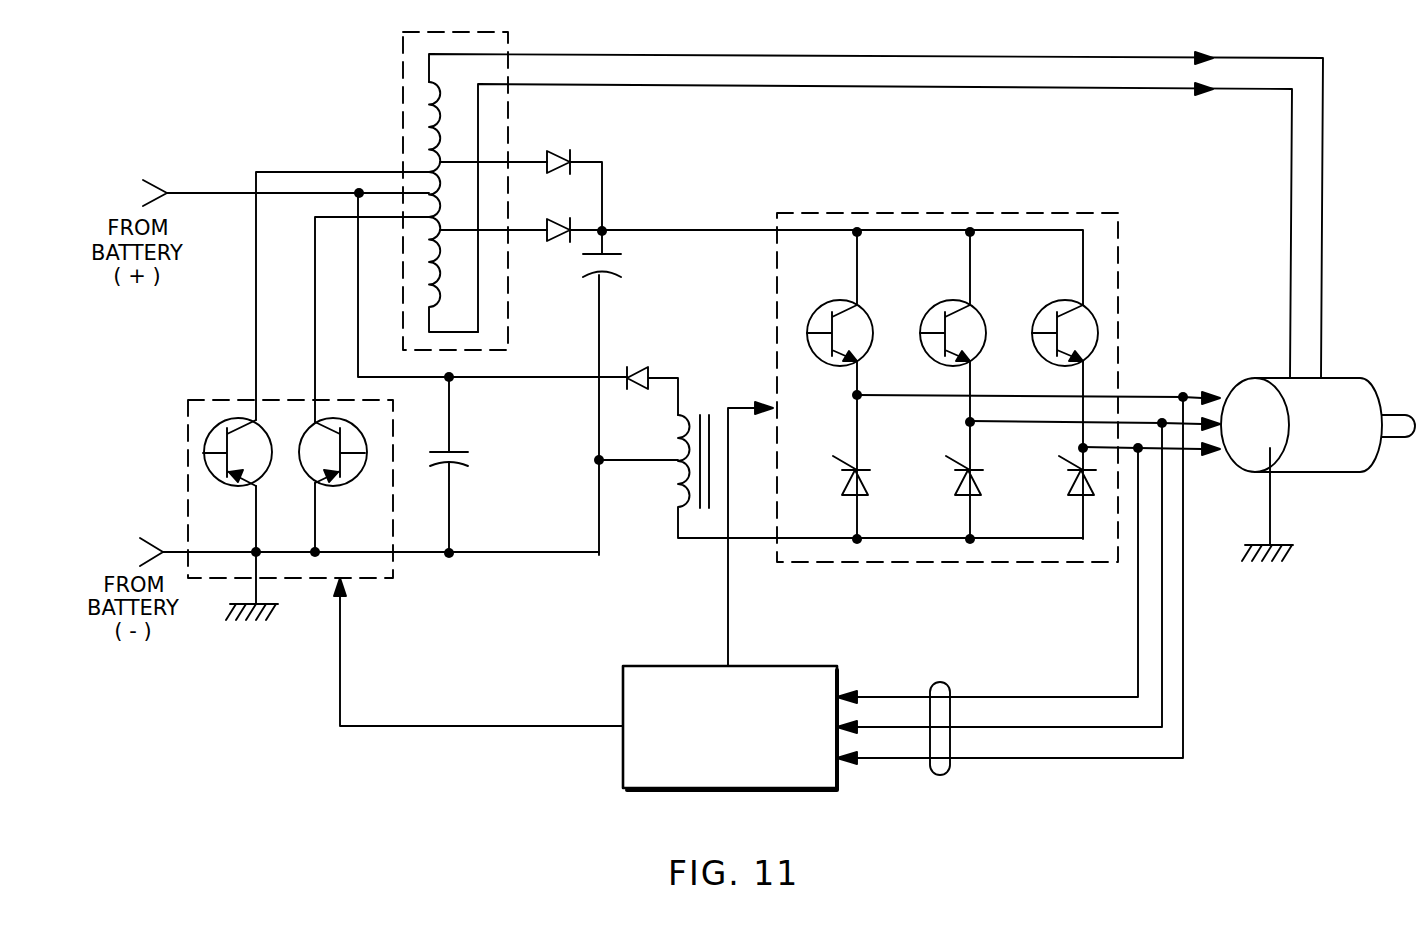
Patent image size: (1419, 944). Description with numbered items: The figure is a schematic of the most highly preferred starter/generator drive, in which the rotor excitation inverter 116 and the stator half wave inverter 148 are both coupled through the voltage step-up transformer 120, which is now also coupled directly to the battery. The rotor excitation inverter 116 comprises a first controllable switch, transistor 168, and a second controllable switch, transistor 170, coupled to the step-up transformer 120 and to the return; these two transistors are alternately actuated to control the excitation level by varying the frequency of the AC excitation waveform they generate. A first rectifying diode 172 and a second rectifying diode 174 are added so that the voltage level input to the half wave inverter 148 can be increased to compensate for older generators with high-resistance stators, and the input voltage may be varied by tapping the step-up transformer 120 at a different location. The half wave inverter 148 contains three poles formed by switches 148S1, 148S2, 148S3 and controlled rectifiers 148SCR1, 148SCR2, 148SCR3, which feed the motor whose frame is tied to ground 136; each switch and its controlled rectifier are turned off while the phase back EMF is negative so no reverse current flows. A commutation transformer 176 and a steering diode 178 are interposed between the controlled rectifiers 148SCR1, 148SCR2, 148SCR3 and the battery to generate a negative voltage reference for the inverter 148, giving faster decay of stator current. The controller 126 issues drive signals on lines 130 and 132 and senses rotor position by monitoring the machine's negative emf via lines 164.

The voltage step-up transformer 120 is at (398, 121).
The first rectifying diode 172 is at (553, 150).
The second rectifying diode 174 is at (556, 246).
The steering diode 178 is at (631, 368).
The commutation transformer 176 is at (688, 418).
The drive signal line 130 is at (725, 600).
The rotor excitation inverter 116 is at (371, 581).
The transistor 168 is at (237, 420).
The transistor 170 is at (345, 486).
The drive signal line 132 is at (445, 729).
The controller 126 is at (657, 666).
The lines 164 is at (945, 776).
The half wave inverter 148 is at (1120, 302).
The switch 148S1 is at (813, 313).
The switch 148S2 is at (940, 305).
The switch 148S3 is at (1057, 305).
The controlled rectifier 148SCR1 is at (847, 483).
The controlled rectifier 148SCR2 is at (957, 483).
The controlled rectifier 148SCR3 is at (1070, 483).
The ground 136 is at (1277, 540).